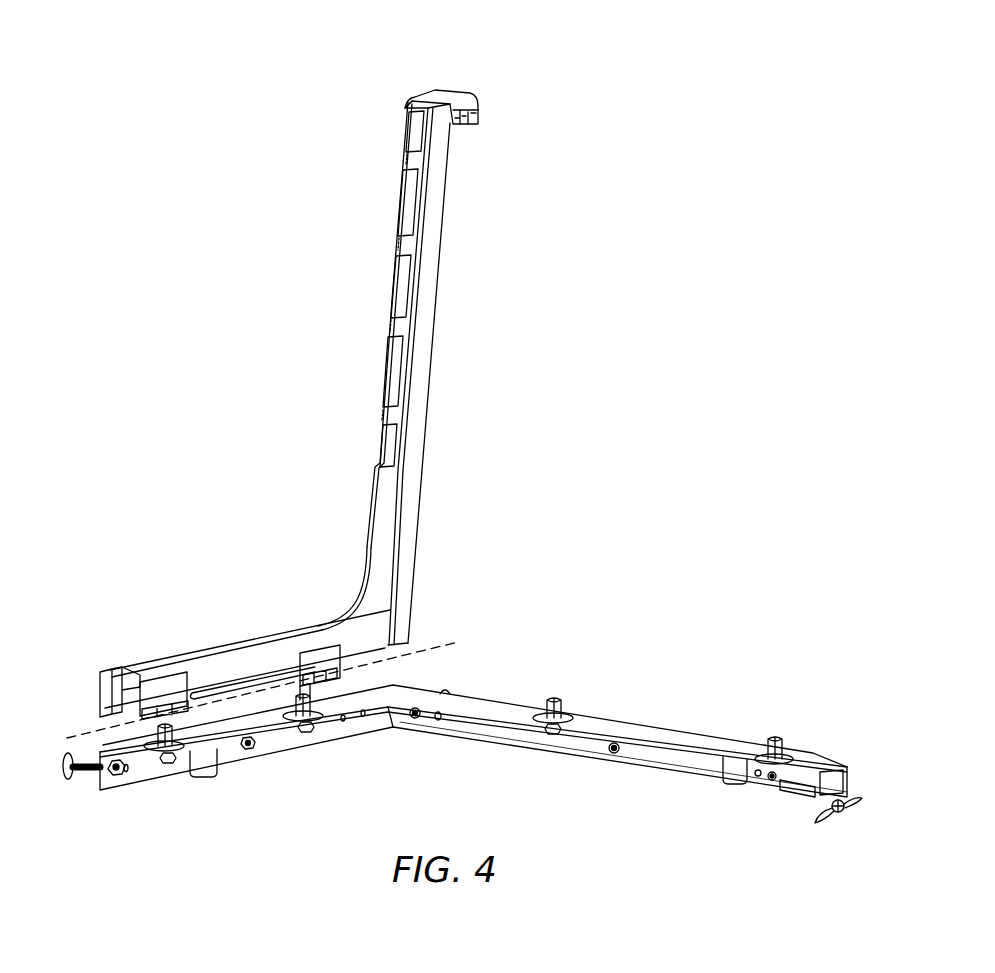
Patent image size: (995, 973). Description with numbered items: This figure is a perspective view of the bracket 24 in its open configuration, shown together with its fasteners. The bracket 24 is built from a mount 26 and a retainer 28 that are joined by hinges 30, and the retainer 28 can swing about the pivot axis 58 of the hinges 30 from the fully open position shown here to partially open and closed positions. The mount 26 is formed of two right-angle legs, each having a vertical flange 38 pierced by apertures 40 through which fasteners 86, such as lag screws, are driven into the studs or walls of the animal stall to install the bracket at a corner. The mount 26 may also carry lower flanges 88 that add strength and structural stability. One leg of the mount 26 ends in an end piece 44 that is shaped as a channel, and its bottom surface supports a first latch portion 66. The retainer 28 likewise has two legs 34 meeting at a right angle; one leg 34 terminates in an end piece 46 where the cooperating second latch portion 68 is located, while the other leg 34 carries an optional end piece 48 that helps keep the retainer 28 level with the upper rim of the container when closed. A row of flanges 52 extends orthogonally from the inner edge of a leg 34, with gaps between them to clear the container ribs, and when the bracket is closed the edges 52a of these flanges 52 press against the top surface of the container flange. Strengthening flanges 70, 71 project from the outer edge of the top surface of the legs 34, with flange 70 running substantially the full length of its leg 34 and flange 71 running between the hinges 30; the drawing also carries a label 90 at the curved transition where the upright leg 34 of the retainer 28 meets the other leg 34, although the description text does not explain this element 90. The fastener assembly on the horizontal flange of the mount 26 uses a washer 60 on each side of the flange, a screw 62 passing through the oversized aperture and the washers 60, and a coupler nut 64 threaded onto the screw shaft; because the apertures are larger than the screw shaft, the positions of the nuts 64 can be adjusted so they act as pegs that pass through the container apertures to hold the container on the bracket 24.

The bracket 24 is at (598, 380).
The mount 26 is at (480, 703).
The retainer 28 is at (367, 547).
The hinges 30 is at (158, 703).
The legs 34 is at (405, 160).
The vertical flange 38 is at (470, 730).
The apertures 40 is at (124, 772).
The end piece 44 is at (803, 785).
The end piece 46 is at (453, 100).
The end piece 48 is at (112, 688).
The flanges 52 is at (393, 375).
The edges 52a is at (397, 445).
The pivot axis 58 is at (433, 645).
The washer 60 is at (156, 752).
The screw 62 is at (168, 760).
The coupler nut 64 is at (157, 737).
The first latch portion 66 is at (838, 805).
The second latch portion 68 is at (478, 124).
The strengthening flange 70 is at (430, 287).
The strengthening flange 71 is at (273, 670).
The fasteners 86 is at (85, 777).
The lower flanges 88 is at (204, 763).
The curved portion 90 is at (347, 598).